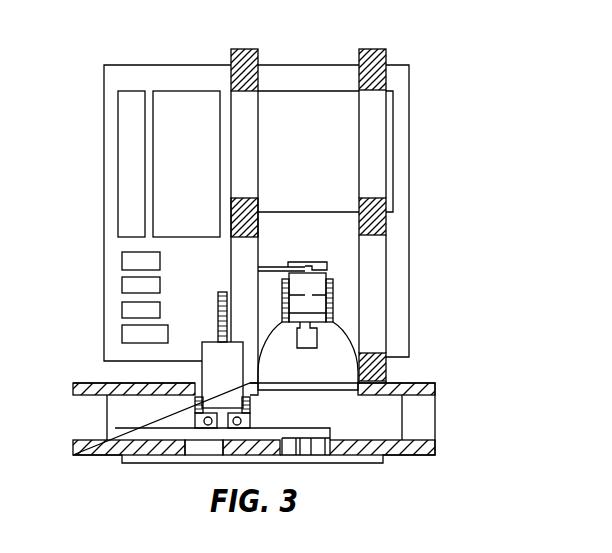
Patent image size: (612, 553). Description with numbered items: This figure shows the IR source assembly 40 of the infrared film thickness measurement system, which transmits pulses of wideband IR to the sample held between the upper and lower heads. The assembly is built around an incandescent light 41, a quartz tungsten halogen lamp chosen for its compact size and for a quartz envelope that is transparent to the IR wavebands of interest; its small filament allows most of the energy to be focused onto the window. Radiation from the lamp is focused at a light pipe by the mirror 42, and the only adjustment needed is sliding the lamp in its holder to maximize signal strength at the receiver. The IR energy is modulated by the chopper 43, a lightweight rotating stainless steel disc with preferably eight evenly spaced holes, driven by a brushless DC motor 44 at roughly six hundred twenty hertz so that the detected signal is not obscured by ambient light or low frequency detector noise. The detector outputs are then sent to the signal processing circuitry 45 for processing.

The IR source assembly 40 is at (422, 133).
The incandescent light 41 is at (318, 339).
The mirror 42 is at (362, 373).
The chopper 43 is at (160, 428).
The brushless DC motor 44 is at (202, 378).
The signal processing circuitry 45 is at (130, 83).